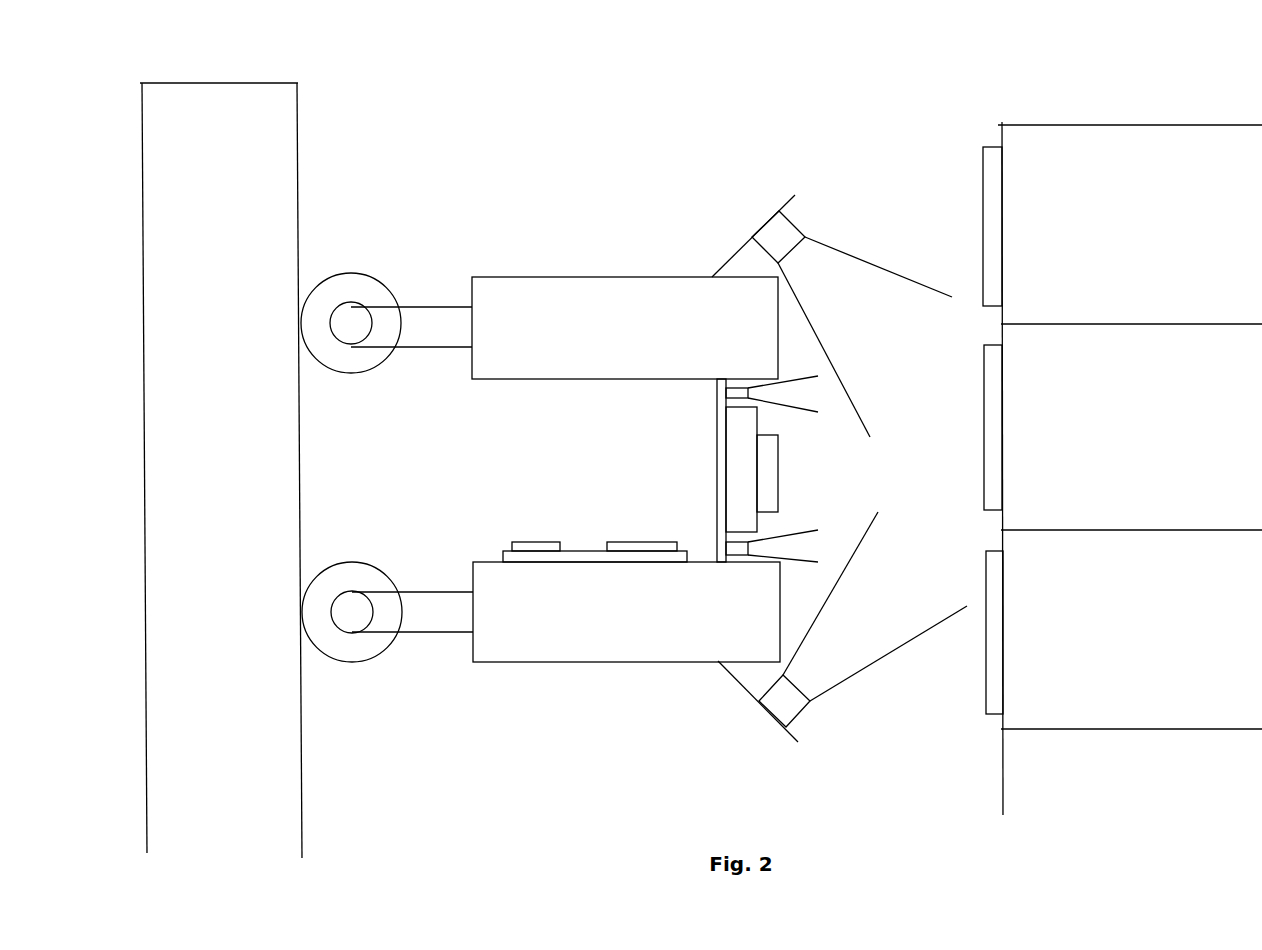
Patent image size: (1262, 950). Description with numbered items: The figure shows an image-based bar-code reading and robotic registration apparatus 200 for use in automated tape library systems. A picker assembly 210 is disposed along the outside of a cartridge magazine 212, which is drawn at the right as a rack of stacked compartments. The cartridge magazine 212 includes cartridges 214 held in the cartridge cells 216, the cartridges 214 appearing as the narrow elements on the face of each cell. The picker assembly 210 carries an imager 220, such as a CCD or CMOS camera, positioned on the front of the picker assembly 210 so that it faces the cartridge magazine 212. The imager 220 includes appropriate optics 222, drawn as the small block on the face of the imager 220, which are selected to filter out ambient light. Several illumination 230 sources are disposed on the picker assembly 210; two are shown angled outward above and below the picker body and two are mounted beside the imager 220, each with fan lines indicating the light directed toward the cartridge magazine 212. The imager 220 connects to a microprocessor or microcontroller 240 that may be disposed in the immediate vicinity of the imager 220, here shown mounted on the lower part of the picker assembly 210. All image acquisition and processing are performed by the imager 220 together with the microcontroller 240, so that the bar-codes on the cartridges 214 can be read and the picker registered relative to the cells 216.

The image-based bar-code reading and robotic registration apparatus 200 is at (558, 102).
The picker assembly 210 is at (555, 325).
The cartridge magazine 212 is at (964, 742).
The cartridges 214 is at (980, 222).
The cartridge cells 216 is at (1142, 182).
The imager 220 is at (825, 473).
The optics 222 is at (768, 488).
The illumination sources 230 is at (785, 228).
The microcontroller 240 is at (560, 528).